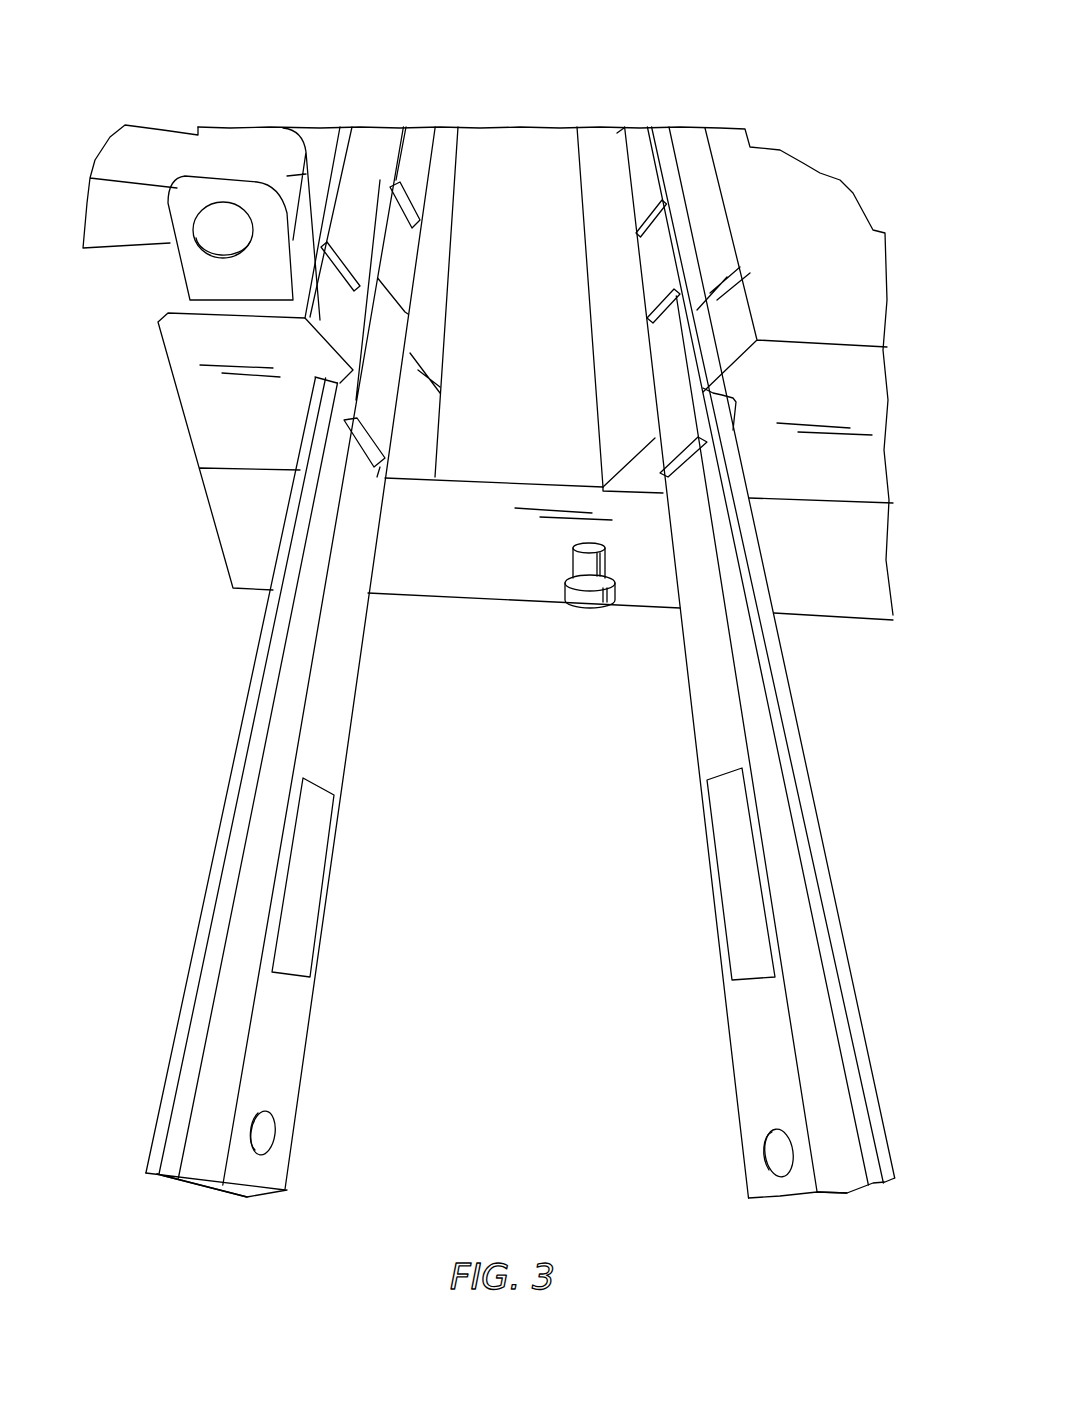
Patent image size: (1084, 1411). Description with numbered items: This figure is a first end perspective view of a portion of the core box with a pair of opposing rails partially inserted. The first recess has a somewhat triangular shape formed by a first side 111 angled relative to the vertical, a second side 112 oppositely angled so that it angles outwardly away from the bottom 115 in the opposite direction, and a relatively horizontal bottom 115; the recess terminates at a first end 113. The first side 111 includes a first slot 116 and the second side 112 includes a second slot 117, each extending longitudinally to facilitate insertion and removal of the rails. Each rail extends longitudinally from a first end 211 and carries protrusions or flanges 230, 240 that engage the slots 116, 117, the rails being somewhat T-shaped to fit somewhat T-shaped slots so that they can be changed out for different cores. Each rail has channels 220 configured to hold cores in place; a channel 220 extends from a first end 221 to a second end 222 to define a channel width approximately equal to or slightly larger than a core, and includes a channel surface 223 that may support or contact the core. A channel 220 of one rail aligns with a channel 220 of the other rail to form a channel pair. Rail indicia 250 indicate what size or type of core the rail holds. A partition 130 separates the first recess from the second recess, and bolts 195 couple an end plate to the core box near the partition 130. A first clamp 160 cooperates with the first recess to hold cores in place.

The first side 111 is at (362, 187).
The second side 112 is at (717, 250).
The first end 113 is at (480, 480).
The bottom 115 is at (537, 247).
The first slot 116 is at (306, 376).
The second slot 117 is at (723, 403).
The partition 130 is at (847, 247).
The first clamp 160 is at (127, 217).
The bolt 195 is at (593, 590).
The first end 211 is at (205, 1168).
The channel 220 is at (392, 238).
The first end 221 is at (398, 298).
The second end 222 is at (396, 188).
The channel surface 223 is at (392, 262).
The flange 230 is at (183, 1027).
The flange 240 is at (867, 1083).
The rail indicia 250 is at (718, 840).